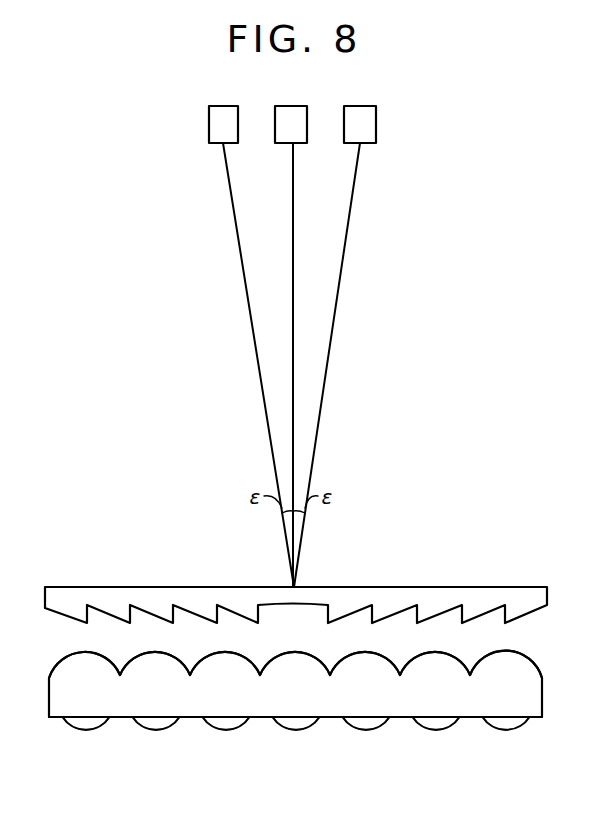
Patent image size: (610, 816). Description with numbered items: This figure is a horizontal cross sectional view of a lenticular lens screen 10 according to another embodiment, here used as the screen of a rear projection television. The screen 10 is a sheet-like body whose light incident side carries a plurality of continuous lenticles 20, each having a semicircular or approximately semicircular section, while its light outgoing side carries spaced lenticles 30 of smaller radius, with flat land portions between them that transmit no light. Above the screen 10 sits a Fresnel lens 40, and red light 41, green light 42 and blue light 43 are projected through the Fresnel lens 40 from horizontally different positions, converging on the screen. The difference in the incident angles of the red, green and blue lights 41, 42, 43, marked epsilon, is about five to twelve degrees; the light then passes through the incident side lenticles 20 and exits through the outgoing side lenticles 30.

The lenticular lens screen 10 is at (319, 691).
The light incident side lenticles 20 is at (515, 665).
The light outgoing side lenticles 30 is at (520, 722).
The Fresnel lens 40 is at (472, 596).
The red light 41 is at (352, 190).
The green light 42 is at (288, 187).
The blue light 43 is at (228, 190).